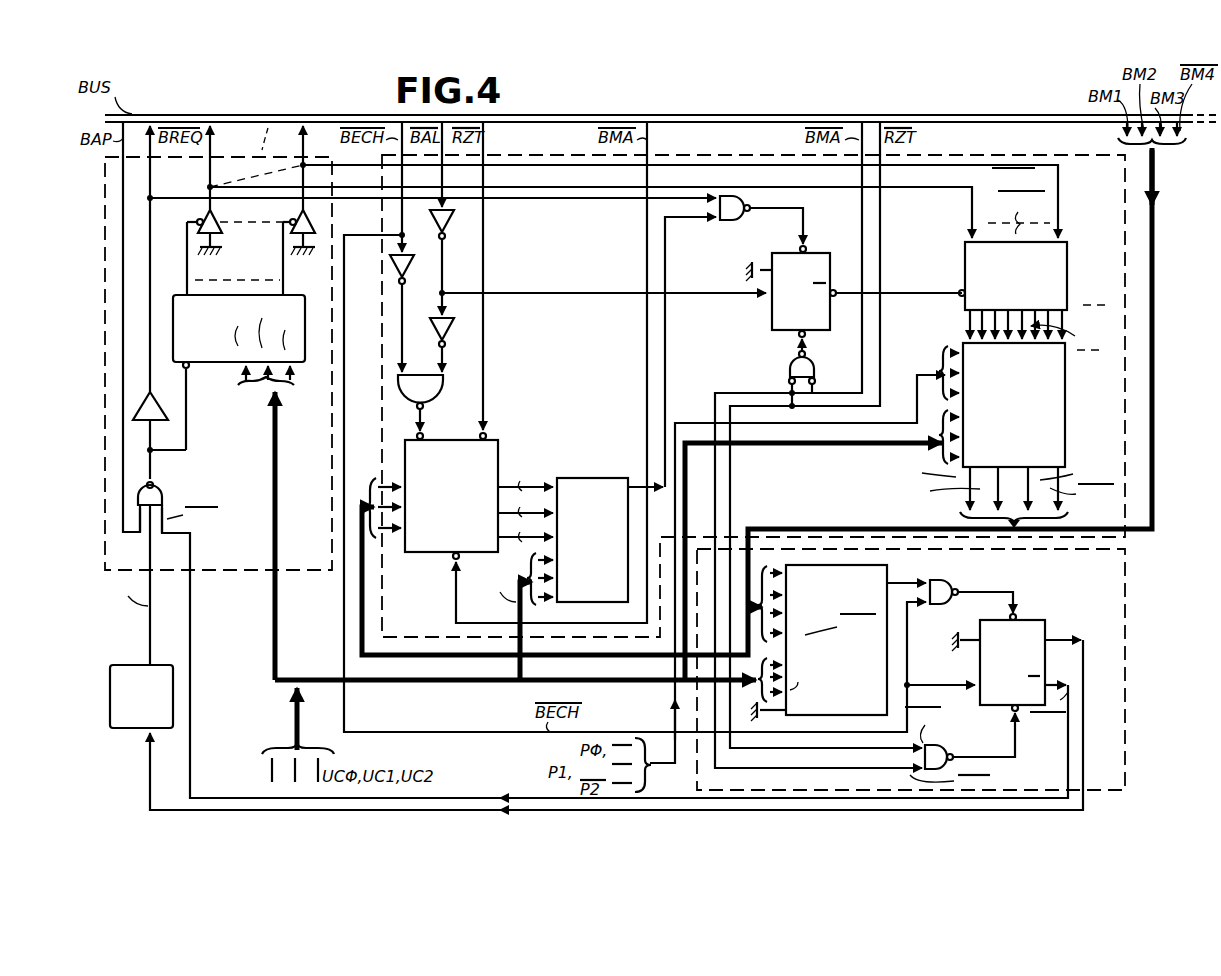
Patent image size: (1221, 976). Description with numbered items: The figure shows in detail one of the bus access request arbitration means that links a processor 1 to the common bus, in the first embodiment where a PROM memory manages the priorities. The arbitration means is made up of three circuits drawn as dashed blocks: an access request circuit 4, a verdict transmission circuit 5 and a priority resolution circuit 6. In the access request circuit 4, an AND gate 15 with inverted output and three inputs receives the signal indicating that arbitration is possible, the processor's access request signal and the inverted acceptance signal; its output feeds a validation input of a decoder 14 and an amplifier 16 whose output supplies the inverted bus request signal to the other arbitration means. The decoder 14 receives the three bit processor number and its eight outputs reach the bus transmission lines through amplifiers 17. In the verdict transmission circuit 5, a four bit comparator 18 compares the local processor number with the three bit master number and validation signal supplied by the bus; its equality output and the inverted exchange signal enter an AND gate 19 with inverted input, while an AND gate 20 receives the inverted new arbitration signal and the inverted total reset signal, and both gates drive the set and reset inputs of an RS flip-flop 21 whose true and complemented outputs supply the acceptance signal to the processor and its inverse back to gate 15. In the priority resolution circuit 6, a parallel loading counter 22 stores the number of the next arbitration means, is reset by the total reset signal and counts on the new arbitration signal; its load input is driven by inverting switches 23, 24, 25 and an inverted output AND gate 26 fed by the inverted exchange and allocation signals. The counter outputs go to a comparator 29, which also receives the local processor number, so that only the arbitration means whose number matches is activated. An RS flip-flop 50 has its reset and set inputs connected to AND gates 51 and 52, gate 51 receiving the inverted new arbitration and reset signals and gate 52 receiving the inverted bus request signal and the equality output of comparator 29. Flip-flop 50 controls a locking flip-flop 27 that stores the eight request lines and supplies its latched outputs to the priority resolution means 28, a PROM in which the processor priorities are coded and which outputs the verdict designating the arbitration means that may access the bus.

The processor 1 is at (141, 696).
The access request circuit 4 is at (250, 566).
The arbitration verdict transmission circuit 5 is at (1116, 722).
The priority resolution circuit 6 is at (412, 638).
The decoder 14 is at (188, 340).
The AND gate 15 is at (156, 490).
The amplifier 16 is at (158, 409).
The amplifiers 17 is at (288, 230).
The four bit comparator 18 is at (864, 694).
The AND gate 19 is at (948, 580).
The AND gate 20 is at (952, 746).
The RS flip-flop 21 is at (1024, 618).
The parallel loading counter 22 is at (410, 552).
The inverting switch 23 is at (446, 218).
The inverting switch 24 is at (448, 330).
The inverting switch 25 is at (403, 276).
The inverted output AND gate 26 is at (441, 388).
The locking flip-flop 27 is at (1046, 286).
The priority resolution means 28 is at (1044, 432).
The comparator 29 is at (592, 478).
The RS flip-flop 50 is at (820, 250).
The AND gate 51 is at (790, 364).
The AND gate 52 is at (730, 220).